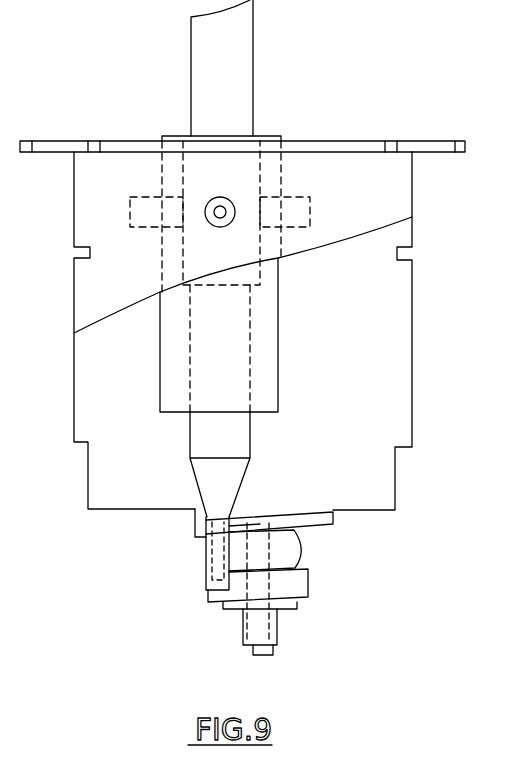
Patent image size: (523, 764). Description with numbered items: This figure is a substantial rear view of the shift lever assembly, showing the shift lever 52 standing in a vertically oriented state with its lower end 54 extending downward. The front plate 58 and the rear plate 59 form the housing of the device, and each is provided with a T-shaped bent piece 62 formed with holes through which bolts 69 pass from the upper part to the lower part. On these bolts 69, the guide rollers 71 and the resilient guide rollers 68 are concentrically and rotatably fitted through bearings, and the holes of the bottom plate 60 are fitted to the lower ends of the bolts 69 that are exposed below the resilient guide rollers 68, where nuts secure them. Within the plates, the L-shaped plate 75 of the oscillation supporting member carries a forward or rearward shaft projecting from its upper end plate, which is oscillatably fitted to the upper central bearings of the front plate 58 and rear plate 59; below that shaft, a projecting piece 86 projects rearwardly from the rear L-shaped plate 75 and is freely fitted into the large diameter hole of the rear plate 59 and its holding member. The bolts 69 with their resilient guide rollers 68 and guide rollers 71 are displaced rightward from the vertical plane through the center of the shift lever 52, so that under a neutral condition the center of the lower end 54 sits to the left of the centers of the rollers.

The shift lever 52 is at (253, 33).
The lower end 54 is at (222, 558).
The front plate 58 is at (412, 392).
The rear plate 59 is at (395, 180).
The bottom plate 60 is at (228, 610).
The T-shaped bent piece 62 is at (327, 528).
The resilient guide roller 68 is at (308, 590).
The bolt 69 is at (262, 510).
The guide roller 71 is at (300, 557).
The L-shaped plate 75 is at (278, 330).
The projecting piece 86 is at (227, 199).